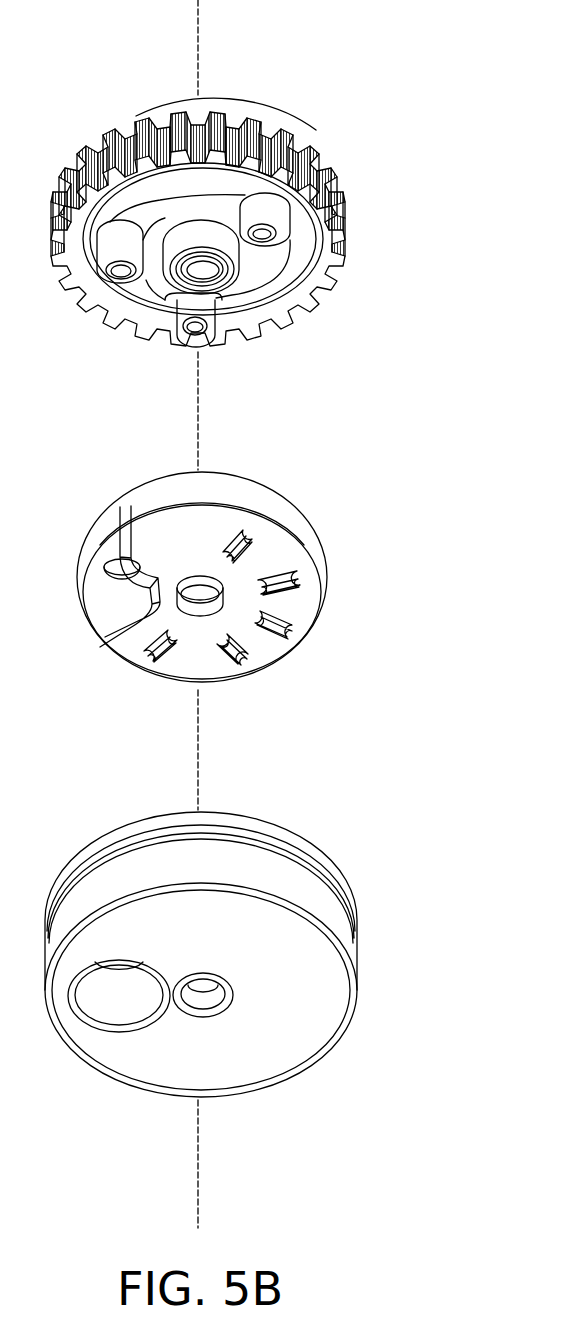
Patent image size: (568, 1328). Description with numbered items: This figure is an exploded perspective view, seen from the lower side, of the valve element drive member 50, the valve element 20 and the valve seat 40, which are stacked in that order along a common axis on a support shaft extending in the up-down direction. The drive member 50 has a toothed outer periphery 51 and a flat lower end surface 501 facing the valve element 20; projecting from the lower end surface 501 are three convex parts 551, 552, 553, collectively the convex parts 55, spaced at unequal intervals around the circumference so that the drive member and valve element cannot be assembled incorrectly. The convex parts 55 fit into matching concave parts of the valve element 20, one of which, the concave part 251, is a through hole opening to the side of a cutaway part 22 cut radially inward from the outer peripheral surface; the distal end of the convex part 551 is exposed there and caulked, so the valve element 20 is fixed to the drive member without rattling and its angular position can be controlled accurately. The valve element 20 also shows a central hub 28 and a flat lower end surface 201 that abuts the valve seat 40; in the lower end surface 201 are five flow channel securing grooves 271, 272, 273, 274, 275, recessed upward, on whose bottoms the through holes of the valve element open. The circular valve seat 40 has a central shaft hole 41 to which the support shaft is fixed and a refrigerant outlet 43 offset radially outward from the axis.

The valve element drive member 50 is at (217, 238).
The gear teeth 51 is at (337, 175).
The lower end surface 501 is at (263, 320).
The convex parts 55 is at (210, 303).
The convex part 551 is at (103, 283).
The convex part 552 is at (281, 241).
The convex part 553 is at (210, 336).
The valve element 20 is at (207, 569).
The lower end surface 201 is at (206, 556).
The cutaway part 22 is at (100, 607).
The concave part 251 is at (113, 582).
The central boss 28 is at (230, 582).
The flow channel securing groove 271 is at (247, 532).
The flow channel securing groove 272 is at (303, 585).
The flow channel securing groove 273 is at (283, 632).
The flow channel securing groove 274 is at (230, 660).
The flow channel securing groove 275 is at (157, 657).
The valve seat 40 is at (222, 972).
The shaft hole 41 is at (197, 1000).
The refrigerant outlet 43 is at (98, 1010).